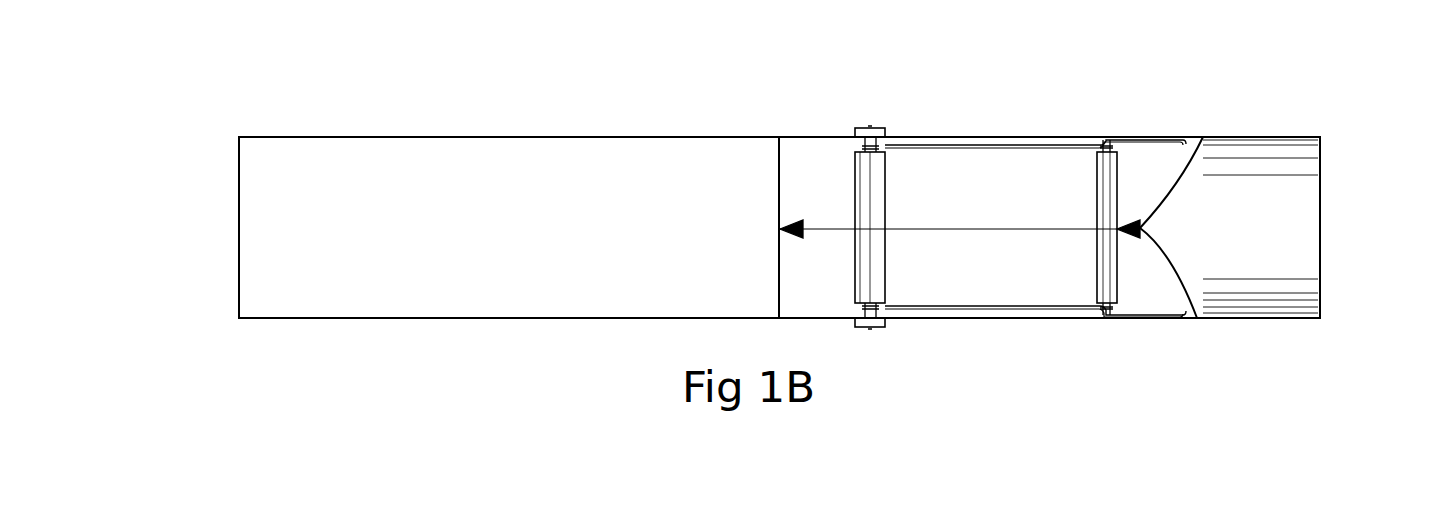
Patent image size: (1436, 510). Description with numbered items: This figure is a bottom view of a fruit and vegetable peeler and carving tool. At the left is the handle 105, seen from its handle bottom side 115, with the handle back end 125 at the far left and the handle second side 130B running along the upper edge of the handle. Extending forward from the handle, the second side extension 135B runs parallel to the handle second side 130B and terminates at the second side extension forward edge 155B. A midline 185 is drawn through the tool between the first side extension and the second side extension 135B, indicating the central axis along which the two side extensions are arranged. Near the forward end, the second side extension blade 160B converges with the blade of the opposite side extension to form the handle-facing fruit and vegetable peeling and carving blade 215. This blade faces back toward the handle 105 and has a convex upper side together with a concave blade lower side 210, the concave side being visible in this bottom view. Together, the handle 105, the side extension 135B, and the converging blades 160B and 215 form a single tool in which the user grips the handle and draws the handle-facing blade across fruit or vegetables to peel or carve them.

The handle 105 is at (430, 137).
The handle bottom side 115 is at (509, 227).
The handle back end 125 is at (268, 158).
The handle second side 130B is at (630, 110).
The second side extension 135B is at (993, 107).
The second side extension forward edge 155B is at (1320, 108).
The second side extension blade 160B is at (1250, 210).
The midline 185 is at (960, 209).
The concave blade lower side 210 is at (1206, 264).
The handle-facing fruit and vegetable peeling and carving blade 215 is at (1131, 197).